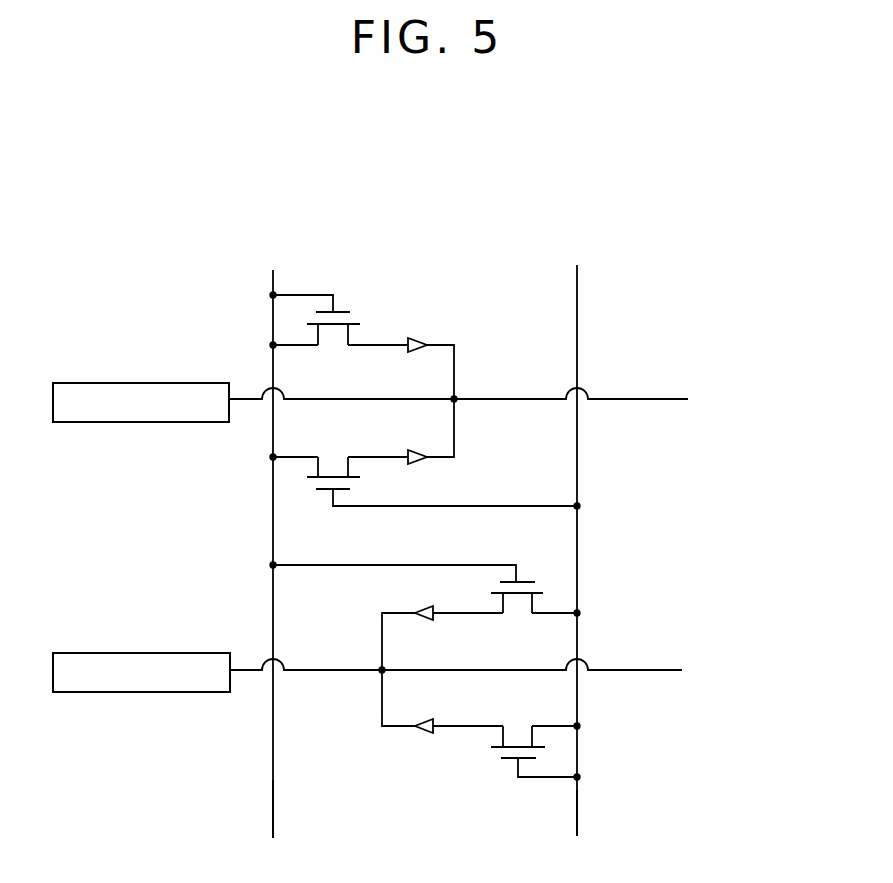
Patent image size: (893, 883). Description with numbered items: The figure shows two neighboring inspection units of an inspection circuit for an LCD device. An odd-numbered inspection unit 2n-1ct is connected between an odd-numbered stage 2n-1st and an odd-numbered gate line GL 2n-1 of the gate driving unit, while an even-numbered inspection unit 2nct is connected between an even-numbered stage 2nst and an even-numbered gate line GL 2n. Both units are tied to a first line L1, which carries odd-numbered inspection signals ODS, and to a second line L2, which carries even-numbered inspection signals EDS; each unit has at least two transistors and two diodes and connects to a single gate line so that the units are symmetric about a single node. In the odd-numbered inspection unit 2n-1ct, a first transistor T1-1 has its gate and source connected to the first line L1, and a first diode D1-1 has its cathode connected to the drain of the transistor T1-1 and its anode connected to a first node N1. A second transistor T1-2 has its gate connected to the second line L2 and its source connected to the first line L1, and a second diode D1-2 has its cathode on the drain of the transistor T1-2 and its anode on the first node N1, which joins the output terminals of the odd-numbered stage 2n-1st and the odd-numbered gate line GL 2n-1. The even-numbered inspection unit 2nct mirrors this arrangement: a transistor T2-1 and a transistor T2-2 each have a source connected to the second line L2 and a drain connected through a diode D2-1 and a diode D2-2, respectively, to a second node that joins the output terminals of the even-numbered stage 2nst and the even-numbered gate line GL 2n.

The odd-numbered inspection signals ODS is at (272, 540).
The even-numbered inspection signals EDS is at (576, 539).
The odd-numbered gate line GL 2n-1 is at (494, 399).
The even-numbered gate line GL 2n is at (484, 670).
The odd-numbered stage 2n-1st is at (140, 383).
The even-numbered stage 2nst is at (142, 653).
The odd-numbered inspection unit 2n-1ct is at (432, 232).
The even-numbered inspection unit 2nct is at (604, 600).
The 1-1th transistor T1-1 is at (339, 330).
The 1-2th transistor T1-2 is at (425, 473).
The 2-1th transistor T2-1 is at (506, 611).
The 2-2th transistor T2-2 is at (506, 743).
The 1-1th diode D1-1 is at (426, 357).
The 1-2th diode D1-2 is at (426, 431).
The 2-1th diode D2-1 is at (414, 627).
The 2-2th diode D2-2 is at (415, 701).
The first node N1 is at (441, 385).
The first line L1 is at (273, 797).
The second line L2 is at (577, 813).